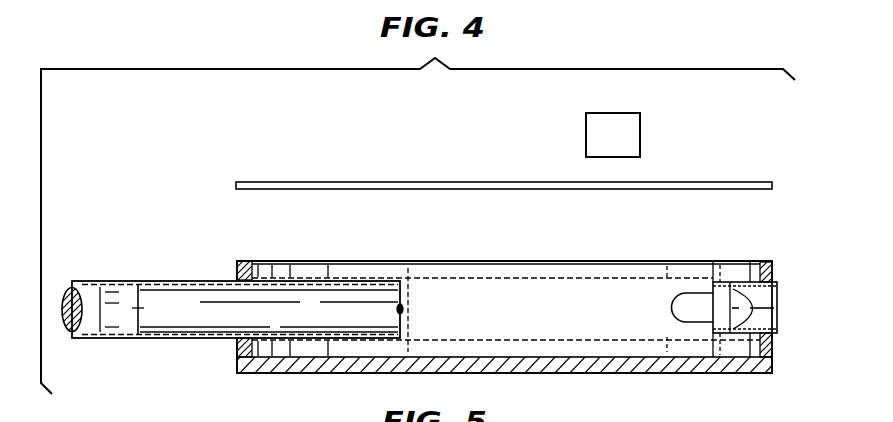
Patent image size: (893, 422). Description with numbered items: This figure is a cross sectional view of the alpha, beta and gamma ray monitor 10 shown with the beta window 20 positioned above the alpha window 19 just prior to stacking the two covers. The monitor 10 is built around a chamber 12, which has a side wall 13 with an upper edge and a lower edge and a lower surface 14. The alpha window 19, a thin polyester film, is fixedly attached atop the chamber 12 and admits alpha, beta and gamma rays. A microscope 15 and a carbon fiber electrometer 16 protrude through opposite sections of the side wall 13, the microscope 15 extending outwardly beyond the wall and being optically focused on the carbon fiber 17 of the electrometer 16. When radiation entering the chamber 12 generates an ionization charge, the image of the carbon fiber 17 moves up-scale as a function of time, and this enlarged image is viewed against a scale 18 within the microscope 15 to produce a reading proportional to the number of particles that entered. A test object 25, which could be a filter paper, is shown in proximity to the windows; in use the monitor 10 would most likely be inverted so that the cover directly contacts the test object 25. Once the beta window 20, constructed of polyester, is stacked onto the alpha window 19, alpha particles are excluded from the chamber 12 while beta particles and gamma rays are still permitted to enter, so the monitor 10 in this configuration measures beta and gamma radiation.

The ABG monitor 10 is at (174, 168).
The chamber 12 is at (579, 248).
The side wall 13 is at (238, 272).
The lower surface 14 is at (710, 373).
The microscope 15 is at (153, 280).
The carbon fiber electrometer 16 is at (733, 286).
The carbon fiber 17 is at (672, 306).
The scale 18 is at (140, 320).
The alpha window 19 is at (488, 262).
The beta window 20 is at (700, 182).
The test object 25 is at (658, 123).